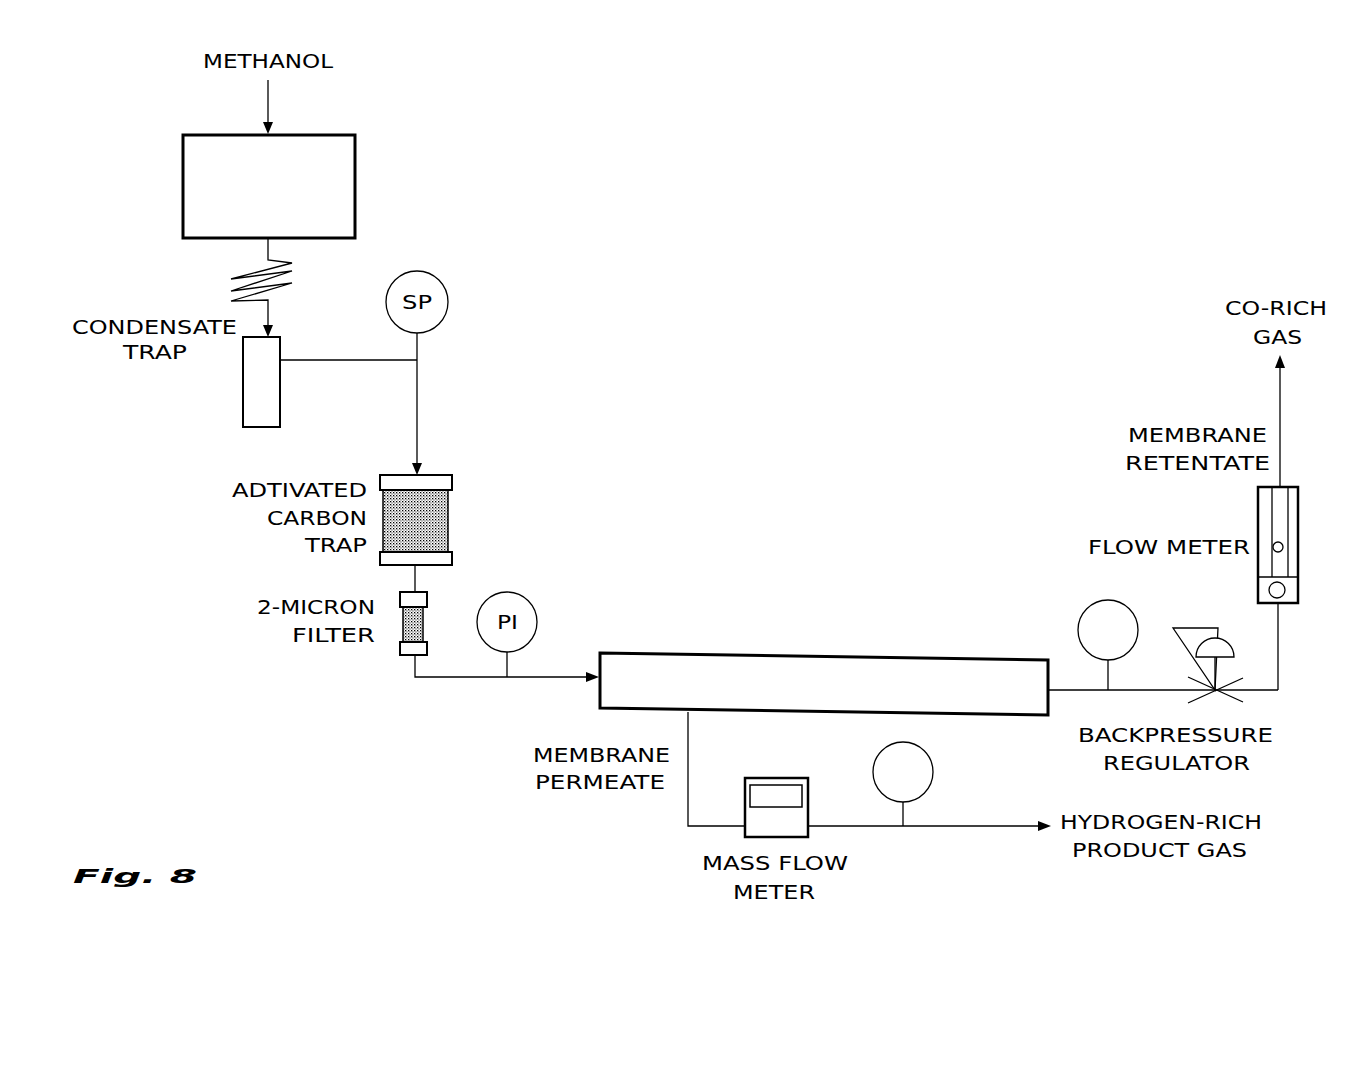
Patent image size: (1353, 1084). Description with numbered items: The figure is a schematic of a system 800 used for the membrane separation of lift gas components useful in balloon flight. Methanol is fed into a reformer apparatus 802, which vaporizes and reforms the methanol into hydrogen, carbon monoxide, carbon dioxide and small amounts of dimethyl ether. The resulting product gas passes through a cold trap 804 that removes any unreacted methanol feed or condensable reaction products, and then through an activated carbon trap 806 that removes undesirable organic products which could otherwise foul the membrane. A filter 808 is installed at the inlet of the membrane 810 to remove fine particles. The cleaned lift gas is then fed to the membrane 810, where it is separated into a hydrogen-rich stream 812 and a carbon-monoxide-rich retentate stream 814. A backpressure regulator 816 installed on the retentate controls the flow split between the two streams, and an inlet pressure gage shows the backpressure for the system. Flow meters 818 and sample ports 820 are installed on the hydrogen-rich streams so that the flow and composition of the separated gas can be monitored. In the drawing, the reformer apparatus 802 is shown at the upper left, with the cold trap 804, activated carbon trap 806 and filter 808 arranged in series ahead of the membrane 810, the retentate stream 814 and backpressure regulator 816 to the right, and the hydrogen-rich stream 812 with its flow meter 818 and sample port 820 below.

The system 800 is at (842, 343).
The reformer apparatus 802 is at (355, 180).
The cold trap 804 is at (243, 397).
The activated carbon trap 806 is at (433, 522).
The filter 808 is at (403, 627).
The membrane 810 is at (775, 653).
The hydrogen-rich stream 812 is at (688, 826).
The carbon-monoxide-rich stream (retentate) 814 is at (1277, 652).
The backpressure regulator 816 is at (1215, 695).
The flow meter 818 is at (785, 828).
The sample port 820 is at (1085, 613).